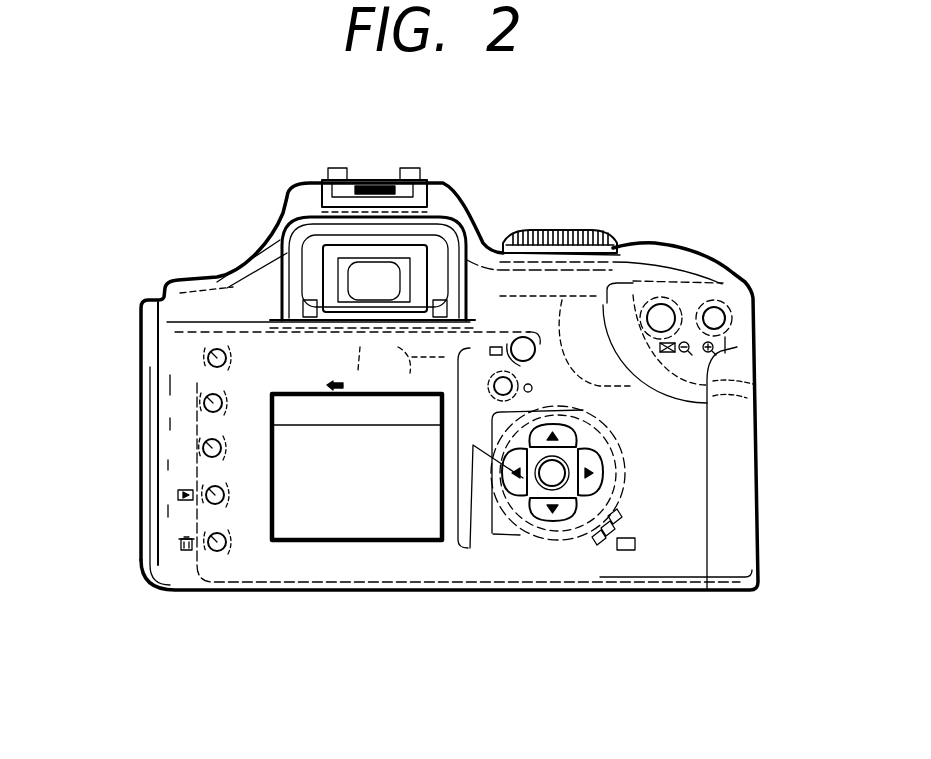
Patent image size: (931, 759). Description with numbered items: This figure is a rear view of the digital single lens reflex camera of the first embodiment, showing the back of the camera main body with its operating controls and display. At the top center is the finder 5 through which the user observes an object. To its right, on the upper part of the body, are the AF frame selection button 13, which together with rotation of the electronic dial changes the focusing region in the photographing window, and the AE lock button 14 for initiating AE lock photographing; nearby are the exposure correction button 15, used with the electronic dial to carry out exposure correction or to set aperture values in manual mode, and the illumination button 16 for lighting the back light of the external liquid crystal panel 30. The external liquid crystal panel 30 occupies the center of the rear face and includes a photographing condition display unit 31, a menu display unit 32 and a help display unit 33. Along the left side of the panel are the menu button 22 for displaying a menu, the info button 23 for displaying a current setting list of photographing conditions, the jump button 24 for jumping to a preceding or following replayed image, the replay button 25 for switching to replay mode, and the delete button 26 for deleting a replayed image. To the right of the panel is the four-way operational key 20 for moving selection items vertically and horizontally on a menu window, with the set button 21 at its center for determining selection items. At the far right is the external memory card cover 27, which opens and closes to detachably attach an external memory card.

The finder 5 is at (382, 278).
The AF frame selection button 13 is at (716, 316).
The AE lock button 14 is at (664, 314).
The exposure correction button 15 is at (507, 375).
The illumination button 16 is at (527, 337).
The four-way operational key 20 is at (593, 458).
The set button 21 is at (558, 466).
The menu button 22 is at (177, 348).
The info button 23 is at (167, 392).
The jump button 24 is at (167, 438).
The replay button 25 is at (177, 483).
The delete button 26 is at (180, 527).
The external memory card cover 27 is at (733, 523).
The external liquid crystal panel 30 is at (530, 517).
The photographing condition display unit 31 is at (358, 378).
The menu display unit 32 is at (310, 475).
The help display unit 33 is at (330, 413).